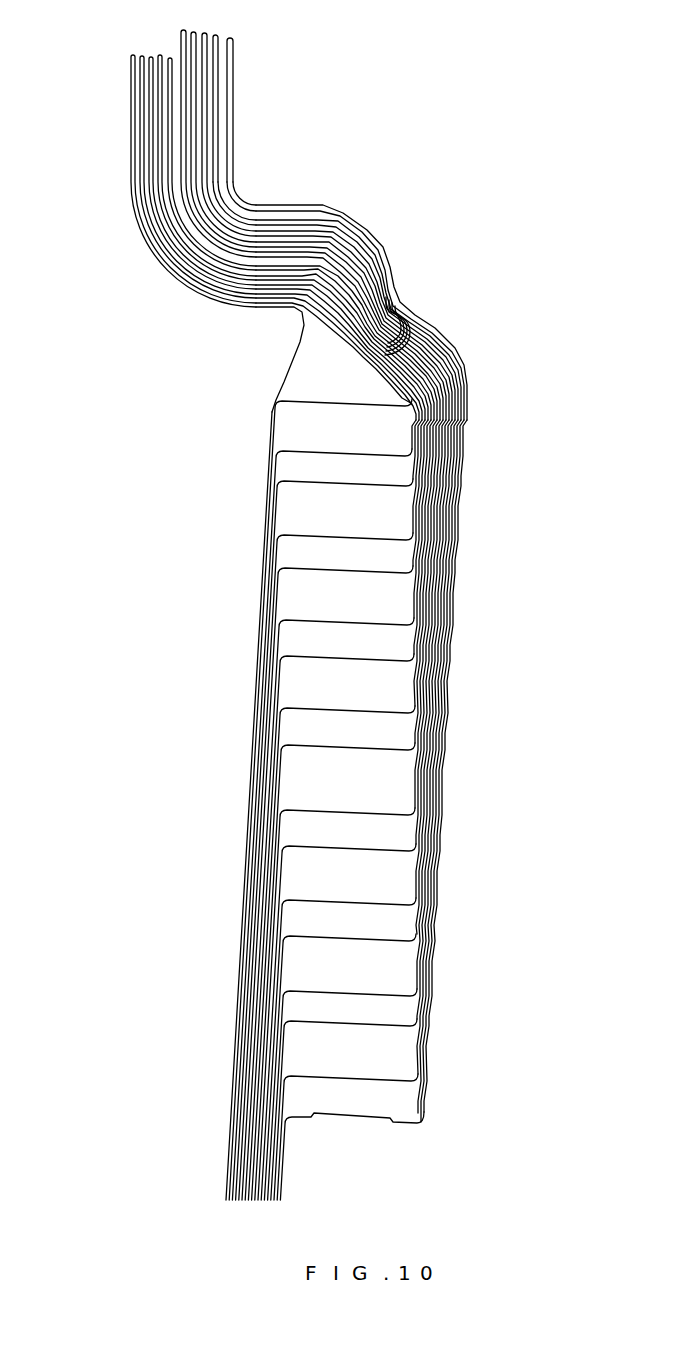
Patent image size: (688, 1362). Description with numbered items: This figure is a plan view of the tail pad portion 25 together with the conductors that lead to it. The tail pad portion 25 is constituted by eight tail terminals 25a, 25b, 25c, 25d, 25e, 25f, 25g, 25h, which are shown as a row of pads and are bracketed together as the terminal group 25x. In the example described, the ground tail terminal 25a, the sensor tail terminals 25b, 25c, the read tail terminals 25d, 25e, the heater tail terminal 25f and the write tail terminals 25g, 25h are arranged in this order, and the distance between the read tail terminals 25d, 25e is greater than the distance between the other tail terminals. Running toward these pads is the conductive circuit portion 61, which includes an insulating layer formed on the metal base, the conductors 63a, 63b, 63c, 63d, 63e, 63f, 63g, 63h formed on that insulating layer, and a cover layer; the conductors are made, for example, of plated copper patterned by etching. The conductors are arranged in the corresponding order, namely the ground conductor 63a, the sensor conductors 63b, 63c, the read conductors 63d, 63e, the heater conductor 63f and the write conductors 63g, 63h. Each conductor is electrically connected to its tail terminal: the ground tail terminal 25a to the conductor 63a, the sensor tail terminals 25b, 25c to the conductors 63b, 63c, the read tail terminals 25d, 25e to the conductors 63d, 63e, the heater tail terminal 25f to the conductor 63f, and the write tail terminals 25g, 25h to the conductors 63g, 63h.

The conductive circuit portion 61 is at (250, 161).
The ground conductor 63a is at (130, 126).
The sensor conductor 63b is at (134, 150).
The sensor conductor 63c is at (146, 170).
The read conductor 63d is at (156, 183).
The read conductor 63e is at (167, 193).
The heater conductor 63f is at (192, 208).
The write conductor 63g is at (218, 210).
The write conductor 63h is at (245, 214).
The tail pad portion 25 is at (220, 755).
The ground tail terminal 25a is at (383, 475).
The sensor tail terminal 25b is at (383, 562).
The sensor tail terminal 25c is at (383, 650).
The read tail terminal 25d is at (383, 742).
The read tail terminal 25e is at (383, 840).
The heater tail terminal 25f is at (383, 930).
The write tail terminal 25g is at (383, 1017).
The write tail terminal 25h is at (406, 1137).
The terminal group 25x is at (415, 824).